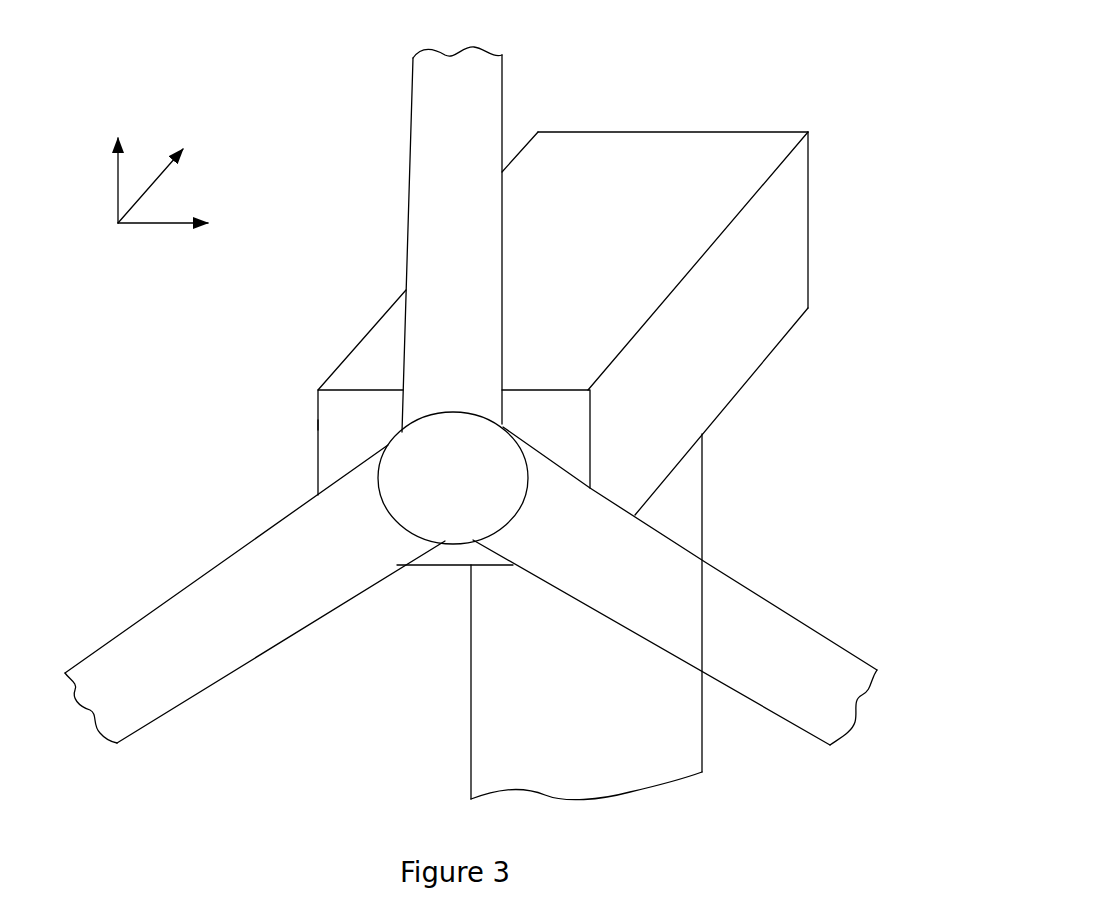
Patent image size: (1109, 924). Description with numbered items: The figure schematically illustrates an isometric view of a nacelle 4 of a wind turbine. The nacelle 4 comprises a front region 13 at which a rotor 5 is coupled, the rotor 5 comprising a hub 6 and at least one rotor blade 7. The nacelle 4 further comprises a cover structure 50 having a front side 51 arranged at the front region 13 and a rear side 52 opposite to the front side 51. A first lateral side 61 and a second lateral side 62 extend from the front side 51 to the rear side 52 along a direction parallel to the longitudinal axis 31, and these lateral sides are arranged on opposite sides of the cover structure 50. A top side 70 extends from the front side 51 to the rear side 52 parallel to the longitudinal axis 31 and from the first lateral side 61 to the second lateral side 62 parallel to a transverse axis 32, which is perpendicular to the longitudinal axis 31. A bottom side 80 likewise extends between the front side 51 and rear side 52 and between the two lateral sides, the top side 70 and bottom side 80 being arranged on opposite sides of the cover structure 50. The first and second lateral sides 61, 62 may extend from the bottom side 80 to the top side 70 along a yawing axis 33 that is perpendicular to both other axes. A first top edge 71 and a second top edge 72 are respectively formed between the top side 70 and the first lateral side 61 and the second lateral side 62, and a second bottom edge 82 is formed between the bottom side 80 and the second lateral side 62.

The nacelle 4 is at (848, 232).
The rotor 5 is at (347, 437).
The hub 6 is at (418, 486).
The rotor blade 7 is at (182, 592).
The front region 13 is at (390, 590).
The longitudinal axis 31 is at (153, 182).
The transverse axis 32 is at (173, 224).
The yawing axis 33 is at (118, 176).
The cover structure 50 is at (636, 132).
The front side 51 is at (332, 450).
The rear side 52 is at (752, 115).
The first lateral side 61 is at (347, 333).
The second lateral side 62 is at (732, 370).
The top side 70 is at (556, 155).
The first top edge 71 is at (392, 300).
The second top edge 72 is at (722, 240).
The bottom side 80 is at (432, 567).
The second bottom edge 82 is at (722, 418).